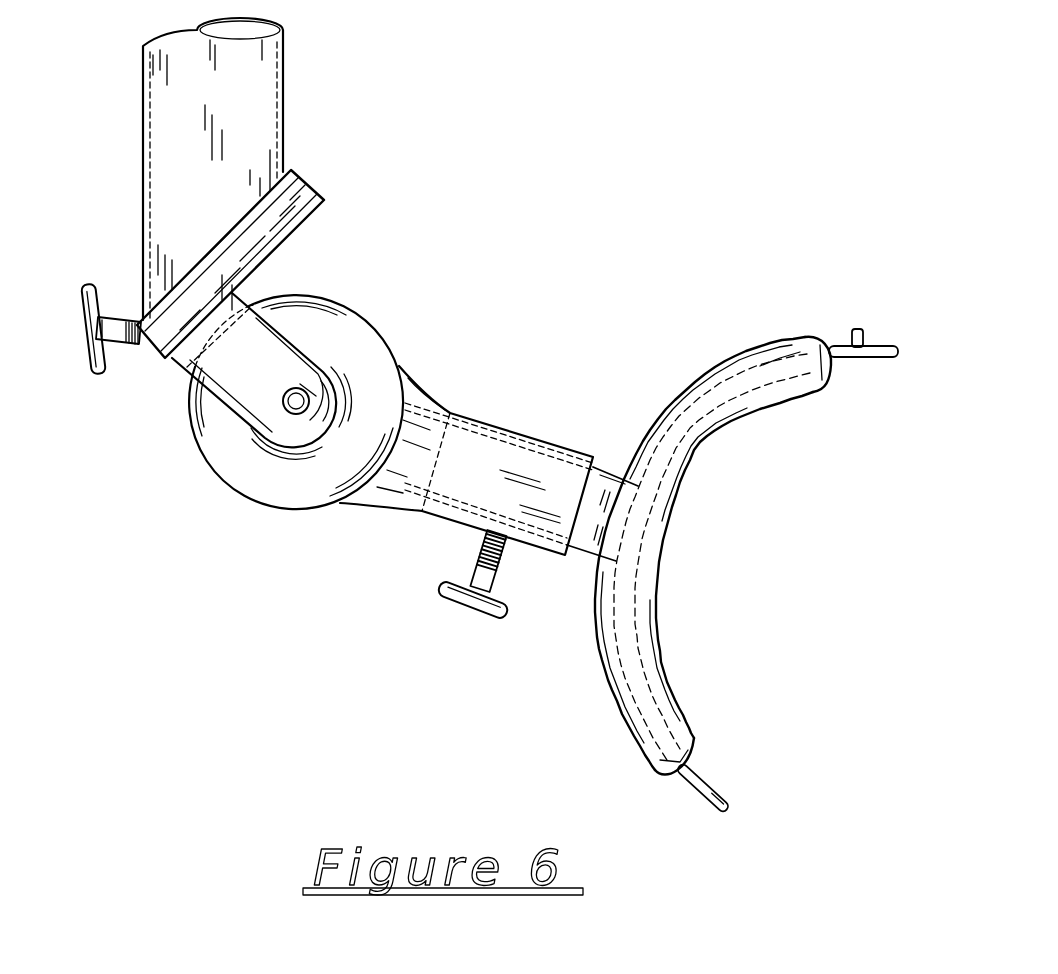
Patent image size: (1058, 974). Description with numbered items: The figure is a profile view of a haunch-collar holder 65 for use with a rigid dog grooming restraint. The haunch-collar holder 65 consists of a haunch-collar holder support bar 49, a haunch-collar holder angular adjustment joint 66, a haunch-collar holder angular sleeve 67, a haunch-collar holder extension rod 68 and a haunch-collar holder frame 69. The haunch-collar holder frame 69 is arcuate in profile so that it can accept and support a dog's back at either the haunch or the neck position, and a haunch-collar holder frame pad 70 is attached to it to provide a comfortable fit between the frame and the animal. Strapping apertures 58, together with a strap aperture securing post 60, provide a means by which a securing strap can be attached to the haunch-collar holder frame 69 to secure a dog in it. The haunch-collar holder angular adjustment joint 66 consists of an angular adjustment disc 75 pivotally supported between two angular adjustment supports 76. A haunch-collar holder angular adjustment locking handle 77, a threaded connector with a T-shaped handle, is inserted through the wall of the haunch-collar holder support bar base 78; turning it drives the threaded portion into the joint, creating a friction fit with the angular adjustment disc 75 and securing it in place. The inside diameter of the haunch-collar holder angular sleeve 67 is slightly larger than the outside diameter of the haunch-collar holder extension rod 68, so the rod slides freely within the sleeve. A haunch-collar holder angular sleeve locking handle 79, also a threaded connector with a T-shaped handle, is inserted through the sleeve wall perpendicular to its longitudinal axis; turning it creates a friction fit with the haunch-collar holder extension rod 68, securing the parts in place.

The haunch-collar holder support bar 49 is at (247, 97).
The haunch-collar holder support bar base 78 is at (288, 208).
The haunch-collar holder 65 is at (486, 150).
The haunch-collar holder angular adjustment locking handle 77 is at (85, 288).
The haunch-collar holder angular adjustment joint 66 is at (193, 368).
The angular adjustment disc 75 is at (230, 437).
The angular adjustment supports 76 is at (296, 425).
The haunch-collar holder angular sleeve 67 is at (450, 505).
The haunch-collar holder extension rod 68 is at (593, 520).
The haunch-collar holder angular sleeve locking handle 79 is at (468, 608).
The haunch-collar holder frame pad 70 is at (740, 410).
The haunch-collar holder frame 69 is at (625, 608).
The strapping apertures 58 is at (883, 343).
The strap aperture securing post 60 is at (852, 328).